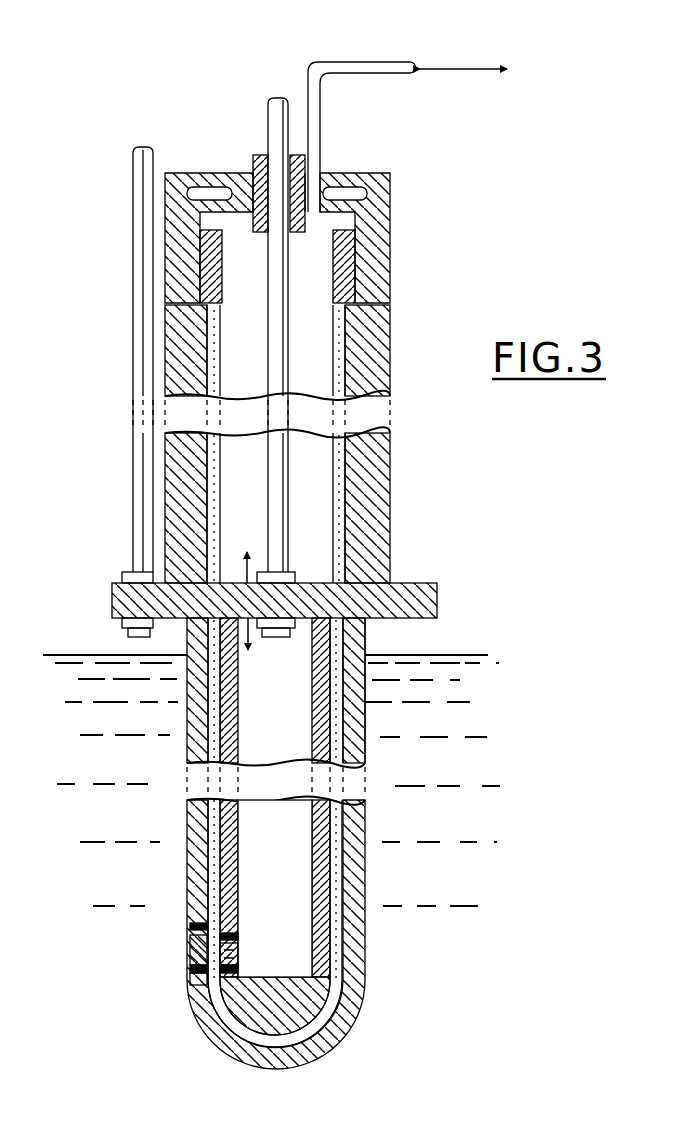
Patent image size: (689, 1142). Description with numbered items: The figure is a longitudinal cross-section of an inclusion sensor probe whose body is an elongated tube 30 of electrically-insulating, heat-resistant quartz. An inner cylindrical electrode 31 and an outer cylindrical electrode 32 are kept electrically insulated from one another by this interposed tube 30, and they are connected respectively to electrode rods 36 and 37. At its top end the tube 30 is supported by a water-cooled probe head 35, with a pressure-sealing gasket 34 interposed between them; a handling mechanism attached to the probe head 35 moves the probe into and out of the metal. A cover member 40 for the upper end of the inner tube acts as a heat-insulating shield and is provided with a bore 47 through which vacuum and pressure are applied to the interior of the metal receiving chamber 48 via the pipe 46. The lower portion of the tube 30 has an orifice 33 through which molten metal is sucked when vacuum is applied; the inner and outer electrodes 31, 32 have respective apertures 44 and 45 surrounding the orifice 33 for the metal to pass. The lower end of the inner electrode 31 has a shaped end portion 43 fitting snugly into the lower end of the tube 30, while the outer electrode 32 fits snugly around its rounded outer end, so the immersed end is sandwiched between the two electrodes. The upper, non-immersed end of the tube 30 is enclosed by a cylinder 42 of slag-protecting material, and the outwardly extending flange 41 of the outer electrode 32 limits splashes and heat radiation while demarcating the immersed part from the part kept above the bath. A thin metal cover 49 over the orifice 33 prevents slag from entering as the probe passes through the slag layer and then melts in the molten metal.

The tube 30 is at (365, 645).
The inner cylindrical electrode 31 is at (318, 733).
The outer cylindrical electrode 32 is at (355, 752).
The orifice 33 is at (210, 958).
The pressure-sealing gasket 34 is at (345, 240).
The water-cooled probe head 35 is at (385, 195).
The electrode rod 36 is at (268, 118).
The electrode rod 37 is at (130, 155).
The cover member 40 is at (308, 583).
The outwardly extending flange 41 is at (415, 583).
The enclosing cylinder 42 is at (378, 335).
The shaped end portion 43 is at (265, 1020).
The aperture 44 is at (238, 955).
The aperture 45 is at (190, 945).
The pipe 46 is at (363, 64).
The bore 47 is at (245, 583).
The metal receiving chamber 48 is at (284, 850).
The thin metal cover 49 is at (195, 968).